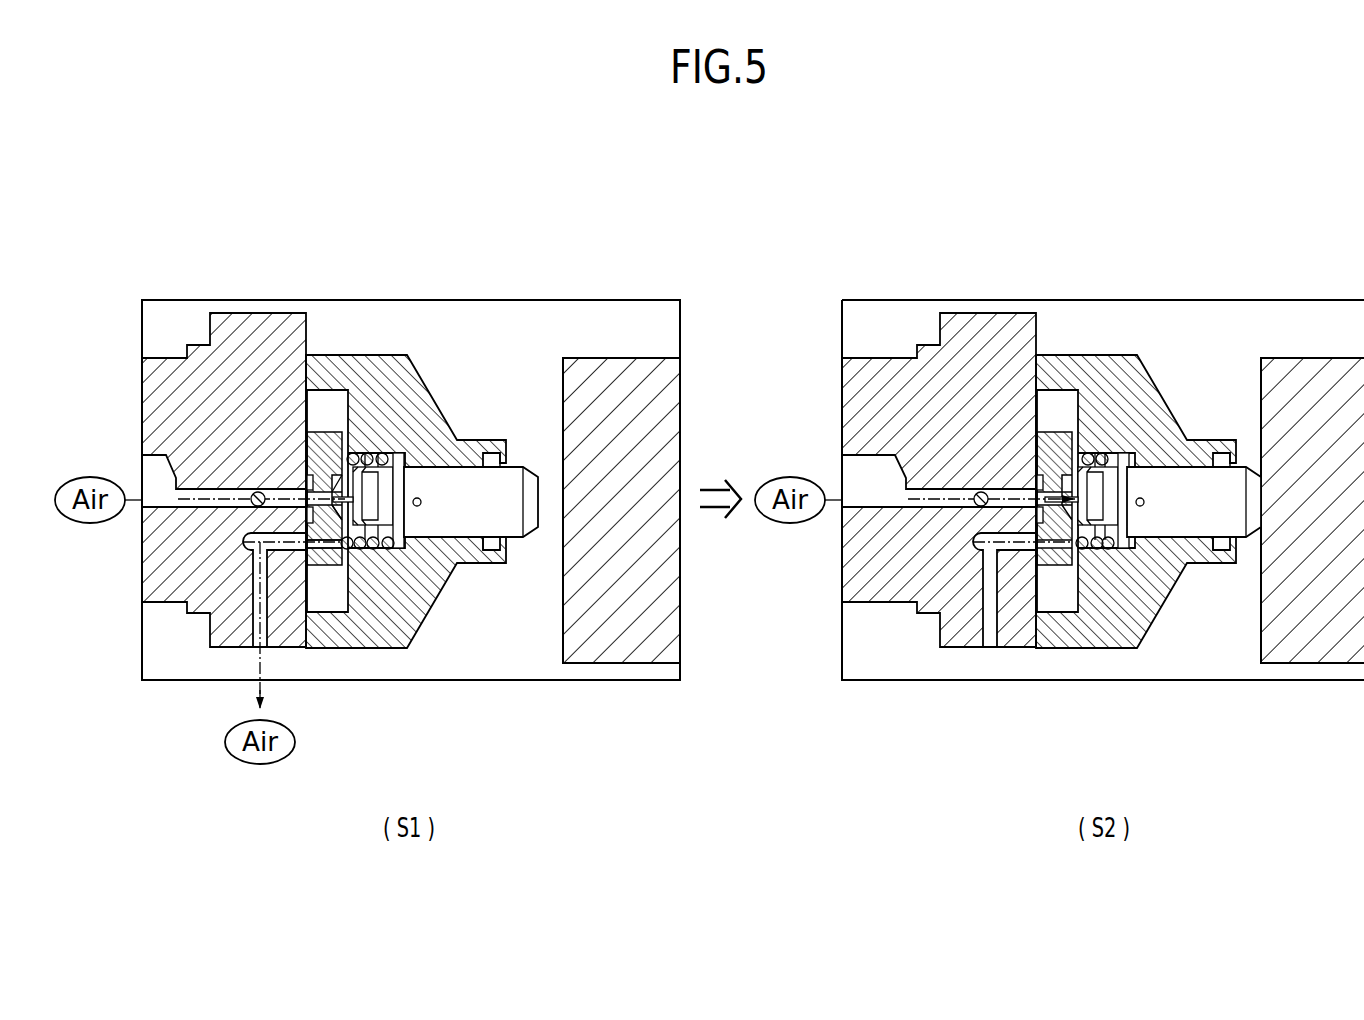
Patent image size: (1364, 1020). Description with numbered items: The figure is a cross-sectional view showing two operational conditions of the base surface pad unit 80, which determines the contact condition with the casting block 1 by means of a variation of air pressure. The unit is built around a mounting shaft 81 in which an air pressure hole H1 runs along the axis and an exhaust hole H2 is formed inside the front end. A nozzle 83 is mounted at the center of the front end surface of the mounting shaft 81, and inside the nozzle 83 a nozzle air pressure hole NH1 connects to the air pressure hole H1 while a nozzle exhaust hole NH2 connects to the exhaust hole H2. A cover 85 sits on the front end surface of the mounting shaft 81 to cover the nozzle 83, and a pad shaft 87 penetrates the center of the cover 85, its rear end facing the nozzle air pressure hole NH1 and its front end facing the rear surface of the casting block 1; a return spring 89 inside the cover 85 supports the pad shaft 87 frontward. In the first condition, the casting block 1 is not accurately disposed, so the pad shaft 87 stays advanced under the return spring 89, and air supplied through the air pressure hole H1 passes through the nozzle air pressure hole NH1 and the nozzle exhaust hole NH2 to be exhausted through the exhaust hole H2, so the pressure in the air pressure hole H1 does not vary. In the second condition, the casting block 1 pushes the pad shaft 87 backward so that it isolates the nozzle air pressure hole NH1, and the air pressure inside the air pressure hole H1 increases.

The casting block 1 is at (662, 407).
The base surface pad unit 80 is at (714, 463).
The mounting shaft 81 is at (256, 360).
The nozzle 83 is at (330, 457).
The cover 85 is at (362, 470).
The pad shaft 87 is at (510, 517).
The return spring 89 is at (400, 565).
The nozzle air pressure hole NH1 is at (336, 488).
The nozzle exhaust hole NH2 is at (328, 552).
The air pressure hole H1 is at (185, 508).
The exhaust hole H2 is at (251, 613).